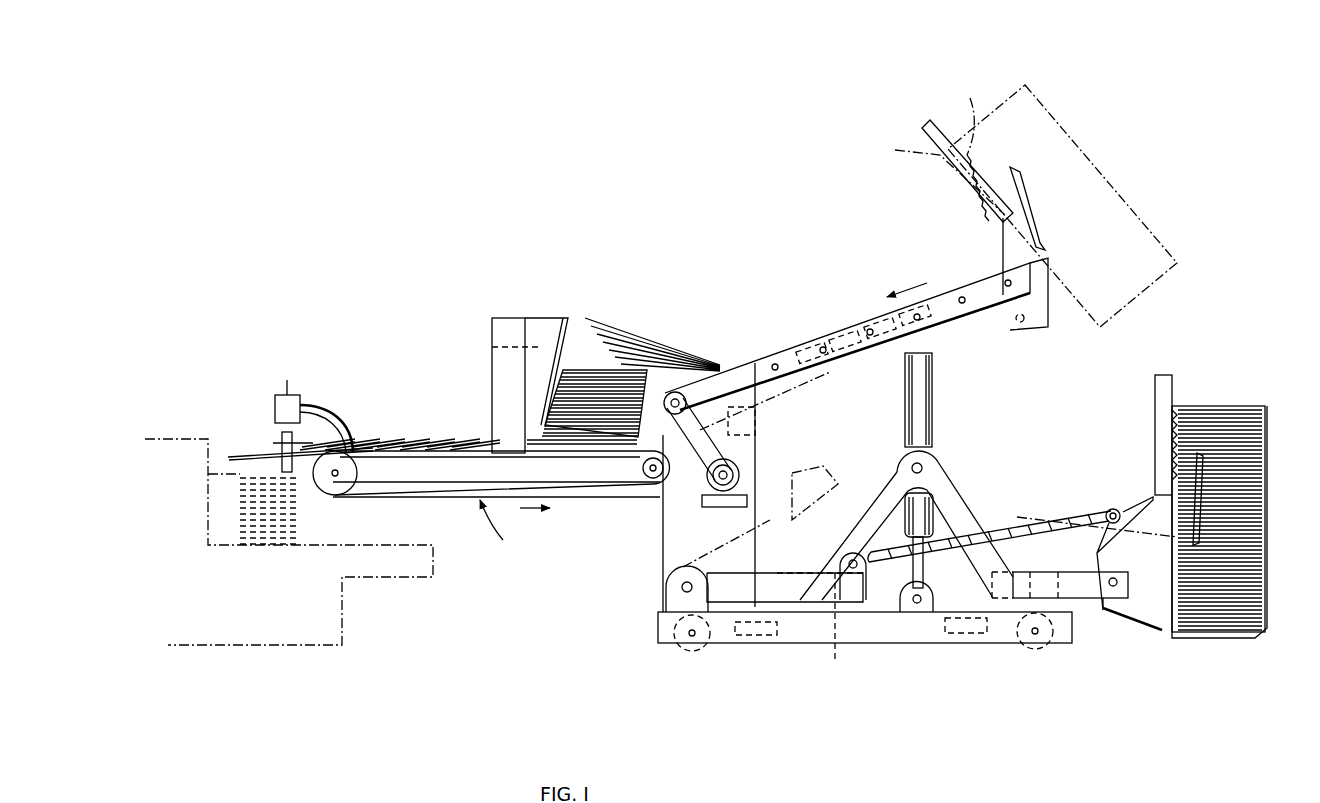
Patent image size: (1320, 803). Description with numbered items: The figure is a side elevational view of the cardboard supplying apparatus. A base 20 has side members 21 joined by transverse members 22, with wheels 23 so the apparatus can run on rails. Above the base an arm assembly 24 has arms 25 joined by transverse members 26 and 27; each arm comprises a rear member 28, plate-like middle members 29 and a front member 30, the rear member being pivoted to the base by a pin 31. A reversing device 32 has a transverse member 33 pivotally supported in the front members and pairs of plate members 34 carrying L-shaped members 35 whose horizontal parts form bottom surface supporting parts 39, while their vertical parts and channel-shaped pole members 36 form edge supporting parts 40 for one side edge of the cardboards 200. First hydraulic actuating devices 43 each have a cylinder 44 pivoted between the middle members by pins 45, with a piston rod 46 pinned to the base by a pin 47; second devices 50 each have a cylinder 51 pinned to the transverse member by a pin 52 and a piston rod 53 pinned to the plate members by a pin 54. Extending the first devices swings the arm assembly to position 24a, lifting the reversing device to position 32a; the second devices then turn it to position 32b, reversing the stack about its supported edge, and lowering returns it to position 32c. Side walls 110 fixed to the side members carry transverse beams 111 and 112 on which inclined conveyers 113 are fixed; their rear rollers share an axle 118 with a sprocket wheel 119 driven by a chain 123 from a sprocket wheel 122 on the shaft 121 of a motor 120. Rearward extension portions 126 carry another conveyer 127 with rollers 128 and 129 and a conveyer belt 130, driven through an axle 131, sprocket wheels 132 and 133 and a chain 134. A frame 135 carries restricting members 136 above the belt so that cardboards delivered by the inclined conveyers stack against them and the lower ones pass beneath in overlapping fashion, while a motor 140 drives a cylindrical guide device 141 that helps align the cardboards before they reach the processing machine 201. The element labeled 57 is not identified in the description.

The base 20 is at (822, 650).
The side member 21 is at (857, 644).
The transverse member 22 is at (763, 637).
The wheel 23 is at (695, 652).
The arm assembly 24 is at (1092, 615).
The rotated position of arm assembly 24a is at (1035, 333).
The arm 25 is at (897, 450).
The transverse member 26 is at (838, 629).
The transverse member 27 is at (1016, 600).
The rear member 28 is at (735, 603).
The middle member 29 is at (893, 466).
The front member 30 is at (1097, 598).
The pin 31 is at (665, 613).
The reversing device 32 is at (1152, 638).
The lifted position of reversing device 32a is at (930, 207).
The reversed position of reversing device 32b is at (1012, 345).
The lowered position of reversing device 32c is at (1055, 513).
The transverse member 33 is at (1101, 604).
The plate member 34 is at (1160, 632).
The L-shaped member 35 is at (1243, 642).
The pole member 36 is at (1172, 388).
The bottom surface supporting part 39 is at (1213, 632).
The edge supporting part 40 is at (1173, 388).
The first hydraulic actuating device 43 is at (943, 414).
The cylinder 44 is at (937, 431).
The pin 45 is at (933, 463).
The piston rod 46 is at (910, 560).
The pin 47 is at (917, 604).
The second hydraulic actuating device 50 is at (944, 572).
The cylinder 51 is at (873, 507).
The pin 52 is at (820, 542).
The piston rod 53 is at (1100, 507).
The pin 54 is at (1119, 511).
The serrated jaw 57 is at (1002, 500).
The side wall 110 is at (745, 368).
The transverse beam 111 is at (803, 430).
The transverse beam 112 is at (804, 401).
The conveyer 113 is at (982, 273).
The axle 118 is at (675, 392).
The sprocket wheel 119 is at (703, 445).
The motor 120 is at (663, 490).
The shaft 121 is at (750, 503).
The sprocket wheel 122 is at (682, 590).
The chain 123 is at (718, 378).
The extension portion 126 is at (430, 476).
The conveyer 127 is at (505, 500).
The roller 128 is at (663, 486).
The roller 129 is at (357, 494).
The conveyer belt 130 is at (503, 527).
The axle 131 is at (638, 488).
The sprocket wheel 132 is at (643, 467).
The sprocket wheel 133 is at (748, 470).
The chain 134 is at (660, 483).
The frame 135 is at (492, 366).
The restricting member 136 is at (561, 318).
The motor 140 is at (288, 394).
The cylindrical guide device 141 is at (281, 433).
The cardboard 200 is at (1040, 103).
The processing machine 201 is at (410, 577).